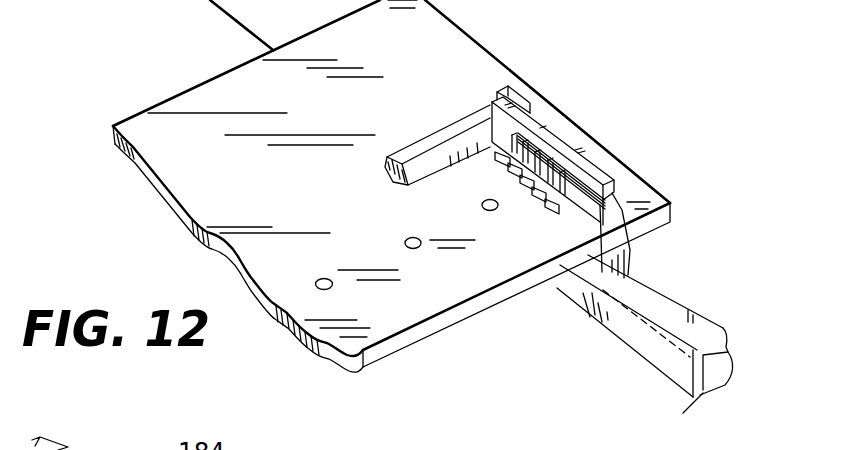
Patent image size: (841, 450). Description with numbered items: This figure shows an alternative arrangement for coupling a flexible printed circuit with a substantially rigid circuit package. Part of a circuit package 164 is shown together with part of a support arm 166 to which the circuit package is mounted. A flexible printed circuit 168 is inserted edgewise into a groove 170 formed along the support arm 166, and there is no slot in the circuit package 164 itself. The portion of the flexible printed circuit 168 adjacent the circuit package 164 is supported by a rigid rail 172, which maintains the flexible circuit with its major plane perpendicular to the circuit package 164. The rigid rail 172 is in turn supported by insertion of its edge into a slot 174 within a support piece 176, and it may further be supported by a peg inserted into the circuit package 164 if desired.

The circuit package 164 is at (475, 52).
The support arm 166 is at (703, 395).
The flexible printed circuit 168 is at (655, 290).
The groove 170 is at (722, 353).
The rigid rail 172 is at (560, 153).
The slot 174 is at (485, 112).
The support piece 176 is at (523, 97).